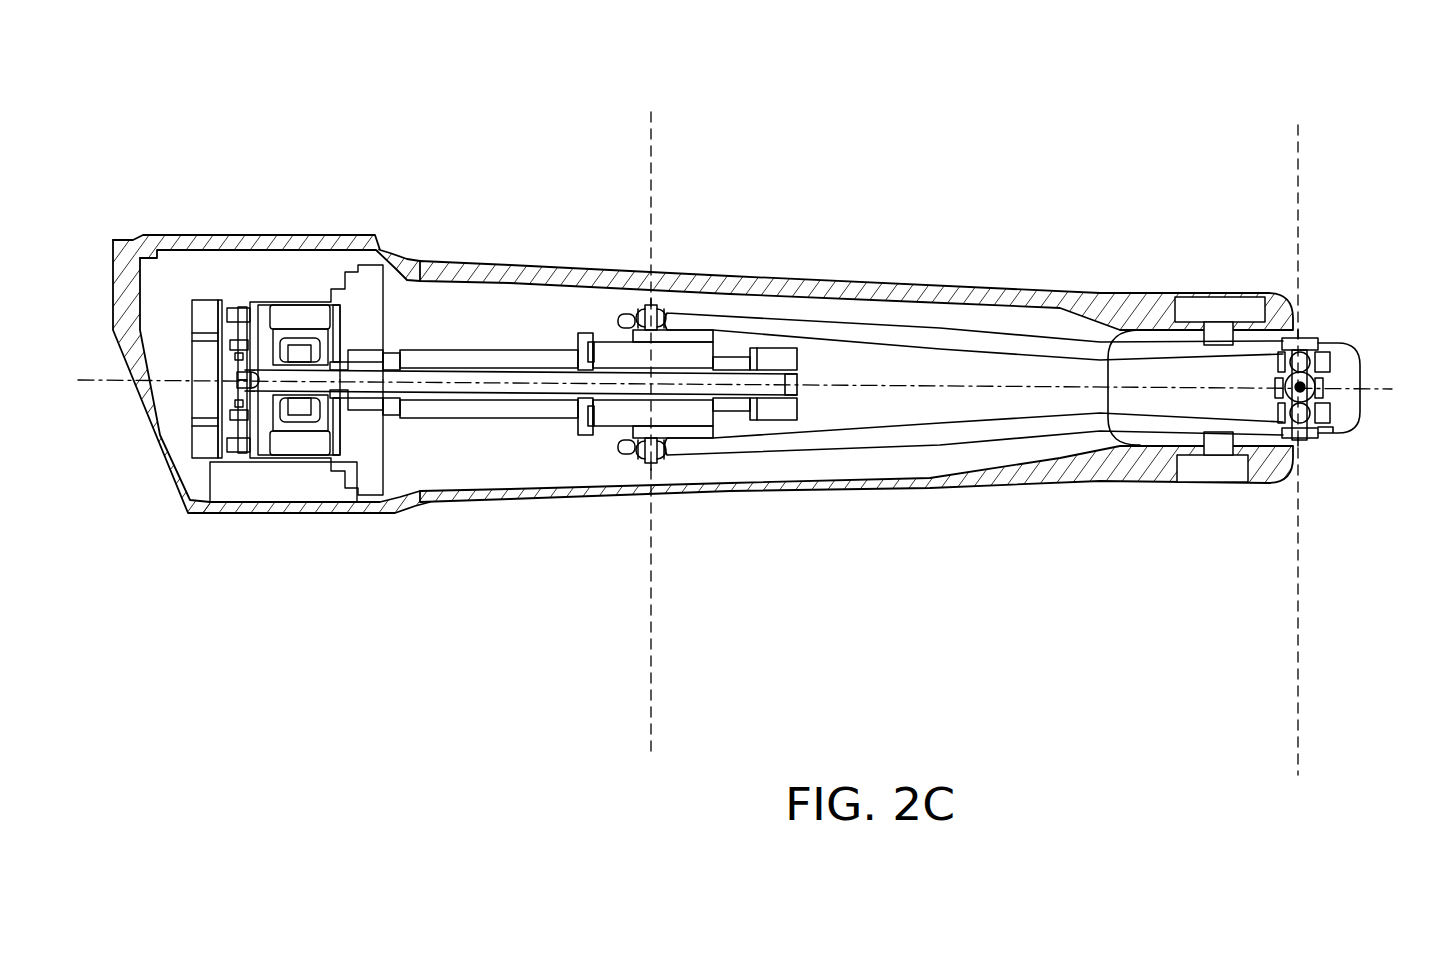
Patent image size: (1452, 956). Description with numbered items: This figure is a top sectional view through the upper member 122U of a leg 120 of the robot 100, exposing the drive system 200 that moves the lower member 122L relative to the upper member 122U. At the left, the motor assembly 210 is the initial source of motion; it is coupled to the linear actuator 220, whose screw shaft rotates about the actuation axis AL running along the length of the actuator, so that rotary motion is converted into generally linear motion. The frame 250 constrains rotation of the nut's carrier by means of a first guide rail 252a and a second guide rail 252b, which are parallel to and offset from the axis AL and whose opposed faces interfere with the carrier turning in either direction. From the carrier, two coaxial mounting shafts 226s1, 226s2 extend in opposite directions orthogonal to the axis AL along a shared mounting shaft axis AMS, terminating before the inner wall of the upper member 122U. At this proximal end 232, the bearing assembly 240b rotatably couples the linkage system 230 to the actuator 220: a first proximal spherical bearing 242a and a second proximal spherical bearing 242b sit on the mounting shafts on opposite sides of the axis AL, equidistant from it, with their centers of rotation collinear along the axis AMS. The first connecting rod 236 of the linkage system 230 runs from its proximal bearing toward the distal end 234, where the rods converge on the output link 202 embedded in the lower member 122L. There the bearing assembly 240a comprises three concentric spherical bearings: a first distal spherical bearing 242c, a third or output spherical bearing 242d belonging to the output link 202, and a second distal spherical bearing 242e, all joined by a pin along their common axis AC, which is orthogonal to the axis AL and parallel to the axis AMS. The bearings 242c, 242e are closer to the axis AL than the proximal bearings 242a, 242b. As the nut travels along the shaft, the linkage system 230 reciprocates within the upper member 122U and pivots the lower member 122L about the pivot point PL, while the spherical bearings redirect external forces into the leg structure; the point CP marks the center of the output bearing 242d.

The robot 100 is at (1018, 110).
The leg 120 is at (1018, 110).
The drive system 200 is at (1018, 110).
The motor assembly 210 is at (383, 610).
The linear actuator 220 is at (805, 582).
The linkage system 230 is at (1300, 637).
The frame 250 is at (803, 157).
The first guide rail 252a is at (497, 356).
The second guide rail 252b is at (477, 420).
The first proximal spherical bearing 242a is at (640, 456).
The second proximal spherical bearing 242b is at (643, 302).
The first distal spherical bearing 242c is at (1315, 440).
The third spherical bearing 242d is at (1322, 378).
The second distal spherical bearing 242e is at (1315, 338).
The first mounting shaft 226s1 is at (647, 480).
The second mounting shaft 226s2 is at (659, 300).
The proximal end 232 is at (713, 513).
The distal end 234 is at (1267, 518).
The first connecting rod 236 is at (838, 320).
The bearing assembly at distal end 240a is at (1338, 267).
The bearing assembly at proximal end 240b is at (688, 211).
The upper member 122U is at (992, 287).
The lower member 122L is at (1335, 345).
The pivot point PL is at (1222, 285).
The contact point CP is at (1320, 390).
The output link 202 is at (1316, 392).
The actuation axis AL is at (750, 390).
The mounting shaft axis AMS is at (654, 418).
The concentric common axis AC is at (1303, 437).